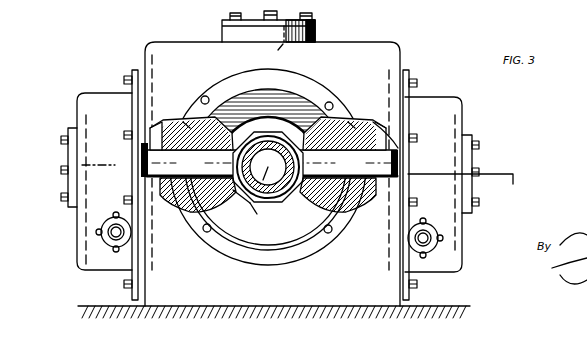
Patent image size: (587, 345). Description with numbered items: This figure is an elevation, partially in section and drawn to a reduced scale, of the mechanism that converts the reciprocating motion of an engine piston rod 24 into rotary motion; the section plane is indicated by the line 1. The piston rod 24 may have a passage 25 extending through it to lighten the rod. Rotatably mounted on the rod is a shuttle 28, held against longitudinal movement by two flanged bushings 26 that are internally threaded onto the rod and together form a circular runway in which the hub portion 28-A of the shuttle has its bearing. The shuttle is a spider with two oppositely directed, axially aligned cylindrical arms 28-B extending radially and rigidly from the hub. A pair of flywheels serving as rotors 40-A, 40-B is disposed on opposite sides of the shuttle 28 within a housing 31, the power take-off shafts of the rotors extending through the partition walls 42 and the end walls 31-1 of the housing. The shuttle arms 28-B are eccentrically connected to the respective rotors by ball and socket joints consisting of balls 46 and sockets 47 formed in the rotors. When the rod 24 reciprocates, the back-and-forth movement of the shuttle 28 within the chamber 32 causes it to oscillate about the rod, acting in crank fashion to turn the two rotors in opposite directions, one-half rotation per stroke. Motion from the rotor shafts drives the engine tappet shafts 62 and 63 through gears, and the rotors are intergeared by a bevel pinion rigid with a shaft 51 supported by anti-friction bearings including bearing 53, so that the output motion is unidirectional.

The section line 1- 1 is at (61, 167).
The piston rod 24 is at (278, 205).
The passage 25 is at (250, 203).
The flanged bushings 26 is at (257, 140).
The shuttle 28 is at (252, 192).
The hub portion 28-A is at (263, 126).
The cylindrical arms 28-B is at (269, 160).
The housing 31 is at (378, 55).
The end walls 31-1 is at (91, 121).
The chamber 32 is at (257, 214).
The flywheel (rotor) 40-A is at (185, 208).
The flywheel (rotor) 40-B is at (182, 218).
The partition walls 42 is at (147, 76).
The balls 46 is at (178, 203).
The sockets 47 is at (186, 124).
The shaft 51 is at (257, 9).
The anti-friction bearing 53 is at (316, 23).
The tappet shaft 62 is at (86, 192).
The tappet shaft 63 is at (426, 226).